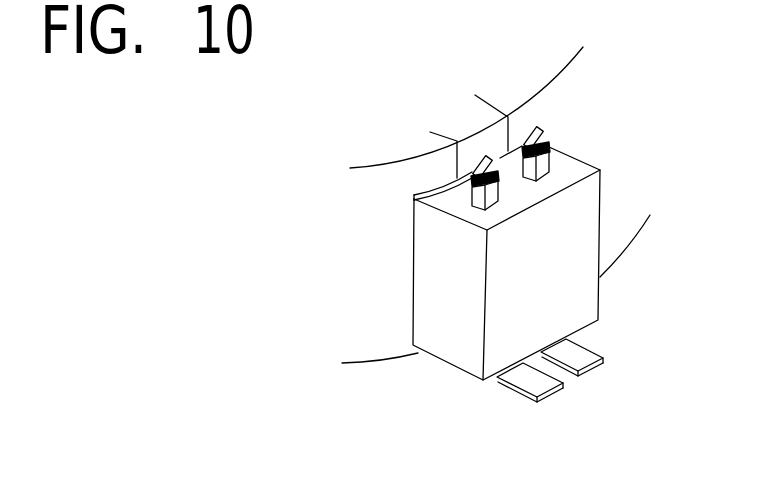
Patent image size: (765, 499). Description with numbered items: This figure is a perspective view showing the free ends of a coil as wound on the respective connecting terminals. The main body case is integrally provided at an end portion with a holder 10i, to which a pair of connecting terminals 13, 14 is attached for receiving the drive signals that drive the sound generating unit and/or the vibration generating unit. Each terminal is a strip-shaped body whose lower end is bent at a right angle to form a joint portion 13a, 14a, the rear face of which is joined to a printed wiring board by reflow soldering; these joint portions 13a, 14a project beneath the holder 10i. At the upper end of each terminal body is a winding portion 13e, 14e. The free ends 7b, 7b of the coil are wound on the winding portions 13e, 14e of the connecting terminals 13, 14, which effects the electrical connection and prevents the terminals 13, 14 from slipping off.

The holder 10i is at (563, 287).
The connecting terminal 13 is at (543, 171).
The connecting terminal 14 is at (484, 207).
The joint portion 13a is at (582, 350).
The joint portion 14a is at (545, 384).
The winding portion 13e is at (531, 127).
The winding portion 14e is at (476, 157).
The free end of coil 7b is at (414, 200).